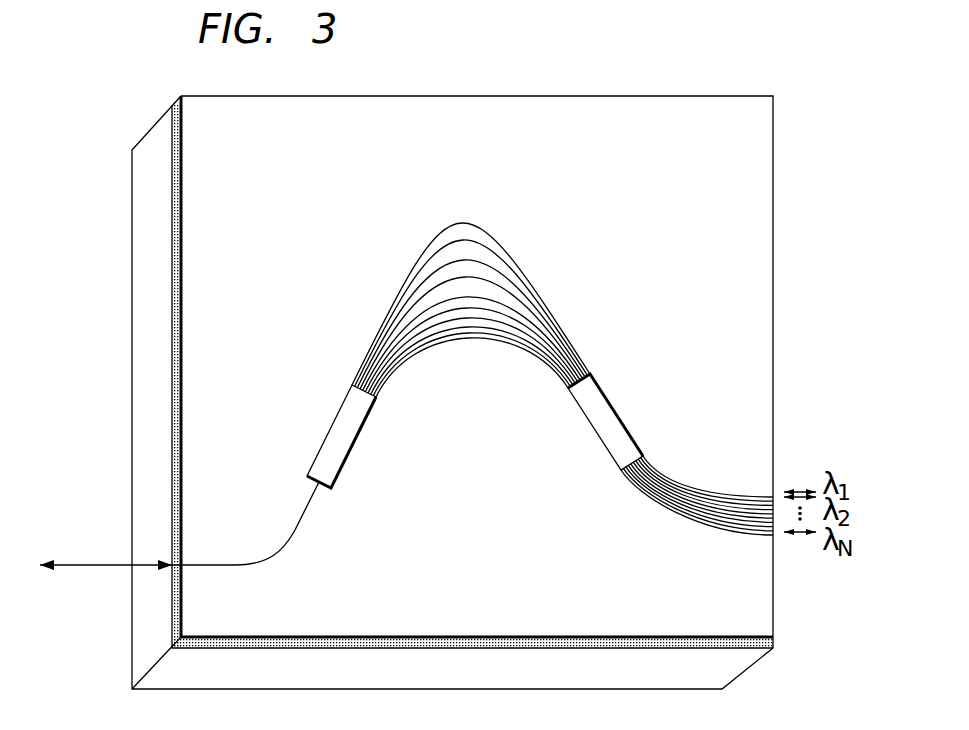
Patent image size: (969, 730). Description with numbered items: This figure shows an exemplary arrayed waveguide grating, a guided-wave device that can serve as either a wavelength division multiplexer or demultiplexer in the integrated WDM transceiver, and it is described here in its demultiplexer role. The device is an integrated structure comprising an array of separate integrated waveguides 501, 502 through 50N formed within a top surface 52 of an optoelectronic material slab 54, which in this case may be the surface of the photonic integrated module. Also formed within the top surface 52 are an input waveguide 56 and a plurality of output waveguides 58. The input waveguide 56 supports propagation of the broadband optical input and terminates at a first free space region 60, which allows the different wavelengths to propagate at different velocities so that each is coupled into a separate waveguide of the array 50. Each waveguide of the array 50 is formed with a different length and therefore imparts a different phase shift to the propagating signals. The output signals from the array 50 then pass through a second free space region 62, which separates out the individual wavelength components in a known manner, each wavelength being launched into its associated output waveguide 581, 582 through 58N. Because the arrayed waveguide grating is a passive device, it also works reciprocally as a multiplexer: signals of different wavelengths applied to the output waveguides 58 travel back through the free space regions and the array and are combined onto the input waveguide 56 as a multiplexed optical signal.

The waveguide array 50 is at (471, 270).
The first integrated waveguide 501 is at (507, 234).
The second integrated waveguide 502 is at (422, 252).
The Nth integrated waveguide 50N is at (468, 340).
The top surface 52 is at (172, 215).
The optoelectronic material slab 54 is at (148, 290).
The input waveguide 56 is at (234, 567).
The output waveguides 58 is at (676, 512).
The first output waveguide 581 is at (700, 497).
The second output waveguide 582 is at (740, 499).
The Nth output waveguide 58N is at (737, 537).
The first free space region 60 is at (332, 437).
The second free space region 62 is at (603, 408).